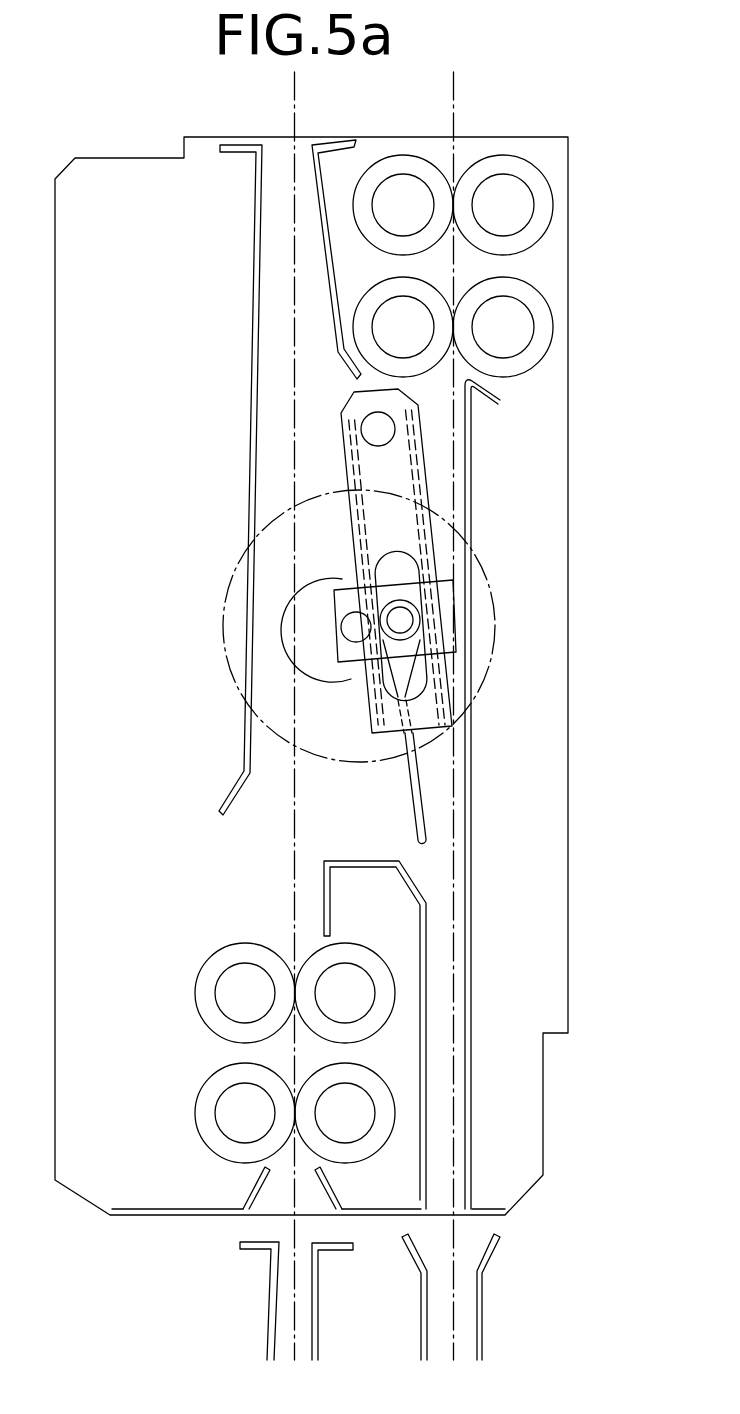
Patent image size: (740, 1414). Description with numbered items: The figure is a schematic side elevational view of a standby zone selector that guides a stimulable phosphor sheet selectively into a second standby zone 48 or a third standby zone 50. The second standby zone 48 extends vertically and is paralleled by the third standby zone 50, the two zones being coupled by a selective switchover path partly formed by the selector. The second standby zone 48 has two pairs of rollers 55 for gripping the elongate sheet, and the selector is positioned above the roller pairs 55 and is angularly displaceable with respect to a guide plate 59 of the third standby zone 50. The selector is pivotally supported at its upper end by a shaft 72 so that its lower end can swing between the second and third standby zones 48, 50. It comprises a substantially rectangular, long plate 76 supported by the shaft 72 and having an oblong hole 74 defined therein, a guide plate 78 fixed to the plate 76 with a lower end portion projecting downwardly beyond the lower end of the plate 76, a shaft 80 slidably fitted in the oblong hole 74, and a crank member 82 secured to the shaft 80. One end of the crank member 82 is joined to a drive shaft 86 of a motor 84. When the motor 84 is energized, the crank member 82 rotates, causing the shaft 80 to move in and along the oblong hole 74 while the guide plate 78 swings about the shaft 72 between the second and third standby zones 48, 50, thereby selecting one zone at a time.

The second standby zone 48 is at (244, 417).
The third standby zone 50 is at (478, 1021).
The pairs of rollers 55 is at (206, 1047).
The guide plate 59 is at (472, 937).
The shaft 72 is at (378, 429).
The oblong hole 74 is at (447, 672).
The plate 76 is at (428, 508).
The guide plate 78 is at (426, 803).
The shaft 80 is at (405, 618).
The crank member 82 is at (337, 662).
The motor 84 is at (492, 633).
The drive shaft 86 is at (350, 632).